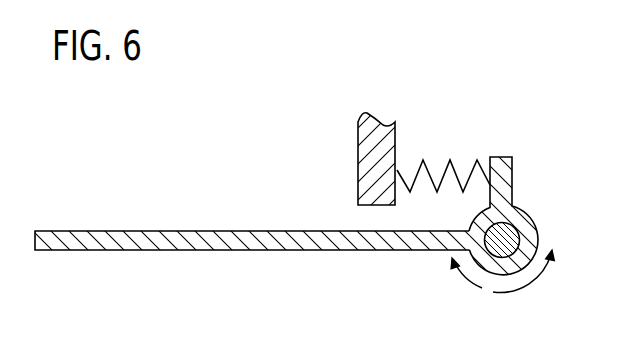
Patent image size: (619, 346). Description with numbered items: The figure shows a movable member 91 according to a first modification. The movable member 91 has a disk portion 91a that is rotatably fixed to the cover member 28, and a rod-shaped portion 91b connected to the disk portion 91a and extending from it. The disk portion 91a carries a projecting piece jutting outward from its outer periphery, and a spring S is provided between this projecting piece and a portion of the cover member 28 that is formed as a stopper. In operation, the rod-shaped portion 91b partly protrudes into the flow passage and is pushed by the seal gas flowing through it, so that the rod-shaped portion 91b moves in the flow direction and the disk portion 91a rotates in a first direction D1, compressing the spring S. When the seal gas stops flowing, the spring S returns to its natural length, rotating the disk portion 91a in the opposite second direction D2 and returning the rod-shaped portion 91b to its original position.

The cover member 28 is at (376, 135).
The spring S is at (452, 160).
The movable member 91 is at (515, 80).
The disk portion 91a is at (527, 215).
The rod-shaped portion 91b is at (298, 236).
The first direction D1 is at (537, 283).
The second direction D2 is at (471, 283).